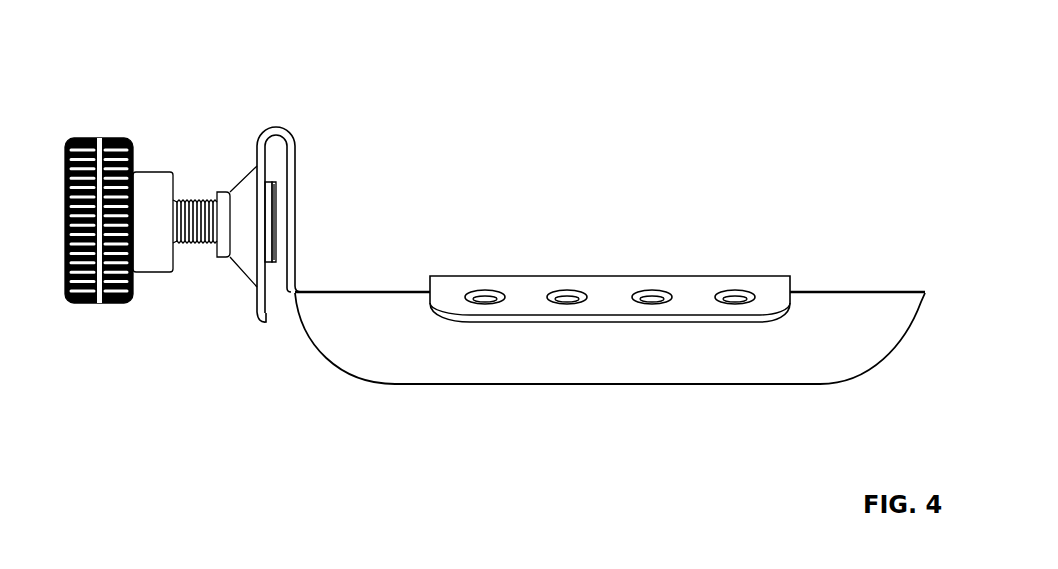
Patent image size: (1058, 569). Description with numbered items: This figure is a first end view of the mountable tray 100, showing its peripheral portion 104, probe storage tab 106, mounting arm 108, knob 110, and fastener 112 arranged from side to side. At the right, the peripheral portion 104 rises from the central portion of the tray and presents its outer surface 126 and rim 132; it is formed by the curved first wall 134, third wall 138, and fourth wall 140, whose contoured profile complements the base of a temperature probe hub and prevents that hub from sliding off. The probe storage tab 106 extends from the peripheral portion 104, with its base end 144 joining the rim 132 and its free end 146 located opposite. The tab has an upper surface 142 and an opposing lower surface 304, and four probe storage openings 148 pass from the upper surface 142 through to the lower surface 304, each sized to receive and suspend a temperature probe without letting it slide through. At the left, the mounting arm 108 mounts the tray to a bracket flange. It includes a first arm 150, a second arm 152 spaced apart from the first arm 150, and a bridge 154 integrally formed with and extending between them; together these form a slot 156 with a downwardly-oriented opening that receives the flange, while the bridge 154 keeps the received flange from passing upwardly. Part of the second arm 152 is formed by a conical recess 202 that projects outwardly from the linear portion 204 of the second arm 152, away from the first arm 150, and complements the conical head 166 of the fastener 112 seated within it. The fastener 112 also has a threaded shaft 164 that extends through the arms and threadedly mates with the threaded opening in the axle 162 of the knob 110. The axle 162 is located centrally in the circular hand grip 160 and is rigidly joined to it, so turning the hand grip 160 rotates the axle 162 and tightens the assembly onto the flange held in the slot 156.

The mountable tray 100 is at (791, 54).
The peripheral portion 104 is at (812, 292).
The probe storage tab 106 is at (615, 285).
The mounting arm 108 is at (297, 253).
The knob 110 is at (100, 138).
The fastener 112 is at (188, 200).
The outer surface 126 is at (468, 343).
The rim 132 is at (878, 292).
The first wall 134 is at (602, 343).
The third wall 138 is at (920, 320).
The fourth wall 140 is at (277, 312).
The upper surface 142 is at (527, 285).
The base end 144 is at (703, 277).
The free end 146 is at (532, 315).
The probe storage openings 148 is at (487, 288).
The first arm 150 is at (296, 187).
The second arm 152 is at (268, 156).
The bridge 154 is at (277, 126).
The slot 156 is at (307, 322).
The hand grip 160 is at (103, 303).
The axle 162 is at (150, 172).
The threaded shaft 164 is at (197, 244).
The head 166 is at (277, 225).
The recess 202 is at (236, 186).
The linear portion 204 is at (255, 287).
The lower surface 304 is at (658, 323).